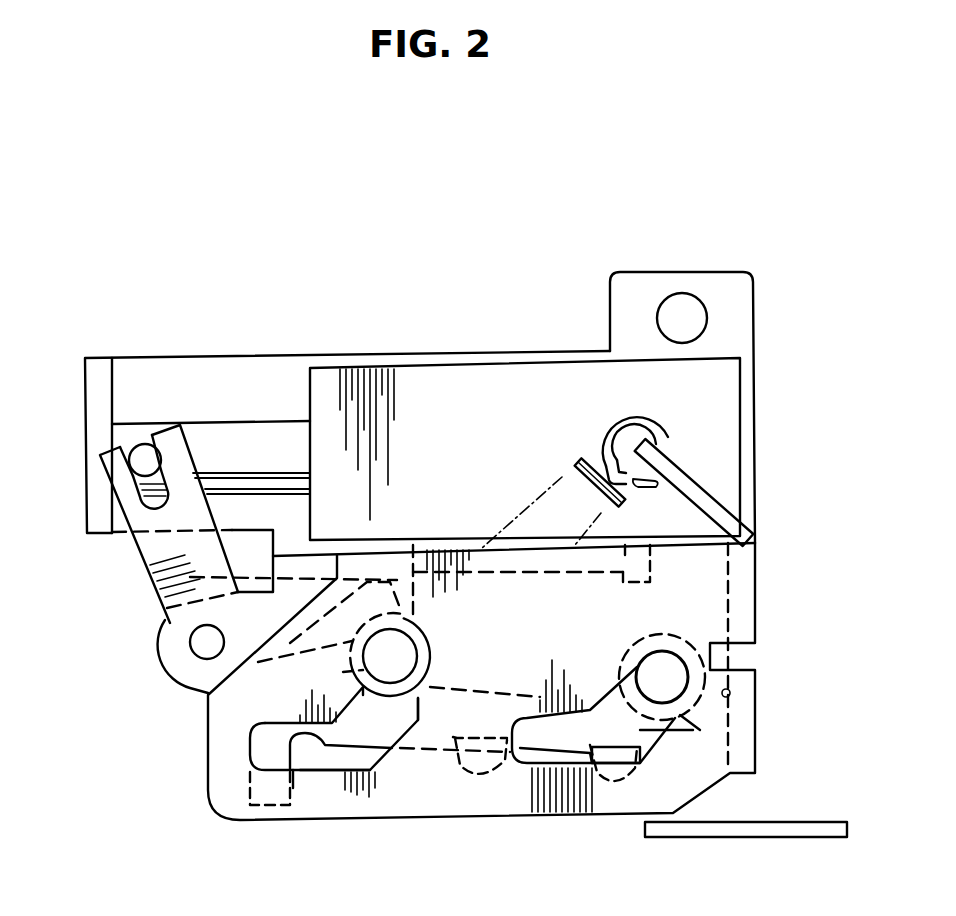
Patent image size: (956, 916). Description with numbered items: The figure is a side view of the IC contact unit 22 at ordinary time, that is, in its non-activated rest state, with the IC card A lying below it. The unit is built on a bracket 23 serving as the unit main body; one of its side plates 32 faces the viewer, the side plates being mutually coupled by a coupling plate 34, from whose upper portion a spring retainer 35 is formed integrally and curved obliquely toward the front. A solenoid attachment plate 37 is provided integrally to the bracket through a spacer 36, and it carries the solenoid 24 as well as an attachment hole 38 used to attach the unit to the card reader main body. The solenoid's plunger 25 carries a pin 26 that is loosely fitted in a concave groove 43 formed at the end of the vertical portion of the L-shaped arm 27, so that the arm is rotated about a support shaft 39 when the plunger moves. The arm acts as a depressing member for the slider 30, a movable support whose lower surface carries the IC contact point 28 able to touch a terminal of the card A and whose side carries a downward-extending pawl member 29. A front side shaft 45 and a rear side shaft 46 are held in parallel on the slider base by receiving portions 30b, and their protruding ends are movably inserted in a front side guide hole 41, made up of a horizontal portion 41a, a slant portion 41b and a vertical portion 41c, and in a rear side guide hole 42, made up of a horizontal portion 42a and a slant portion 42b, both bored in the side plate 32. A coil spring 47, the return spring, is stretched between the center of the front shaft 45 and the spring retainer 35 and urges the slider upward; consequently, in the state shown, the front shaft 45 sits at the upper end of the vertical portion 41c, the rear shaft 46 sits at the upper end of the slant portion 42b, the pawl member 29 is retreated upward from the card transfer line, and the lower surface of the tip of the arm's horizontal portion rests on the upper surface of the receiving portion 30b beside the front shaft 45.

The IC contact unit 22 is at (373, 250).
The bracket 23 is at (218, 343).
The solenoid 24 is at (460, 387).
The plunger 25 is at (275, 435).
The pin 26 is at (138, 457).
The L-shaped arm 27 is at (143, 563).
The IC contact point 28 is at (480, 778).
The pawl member 29 is at (272, 807).
The slider 30 is at (505, 695).
The receiving portion 30b is at (418, 540).
The side plate 32 is at (223, 755).
The coupling plate 34 is at (731, 693).
The spring retainer 35 is at (693, 470).
The spacer 36 is at (567, 575).
The solenoid attachment plate 37 is at (550, 350).
The attachment hole 38 is at (687, 293).
The support shaft 39 is at (200, 646).
The front side guide hole 41 is at (393, 756).
The horizontal portion 41a is at (313, 773).
The slant portion 41b is at (377, 762).
The vertical portion 41c is at (420, 697).
The rear side guide hole 42 is at (650, 735).
The horizontal portion 42a is at (530, 765).
The slant portion 42b is at (693, 730).
The concave groove 43 is at (165, 458).
The front side shaft 45 is at (400, 655).
The rear side shaft 46 is at (660, 670).
The coil spring 47 is at (545, 493).
The IC card A is at (813, 818).